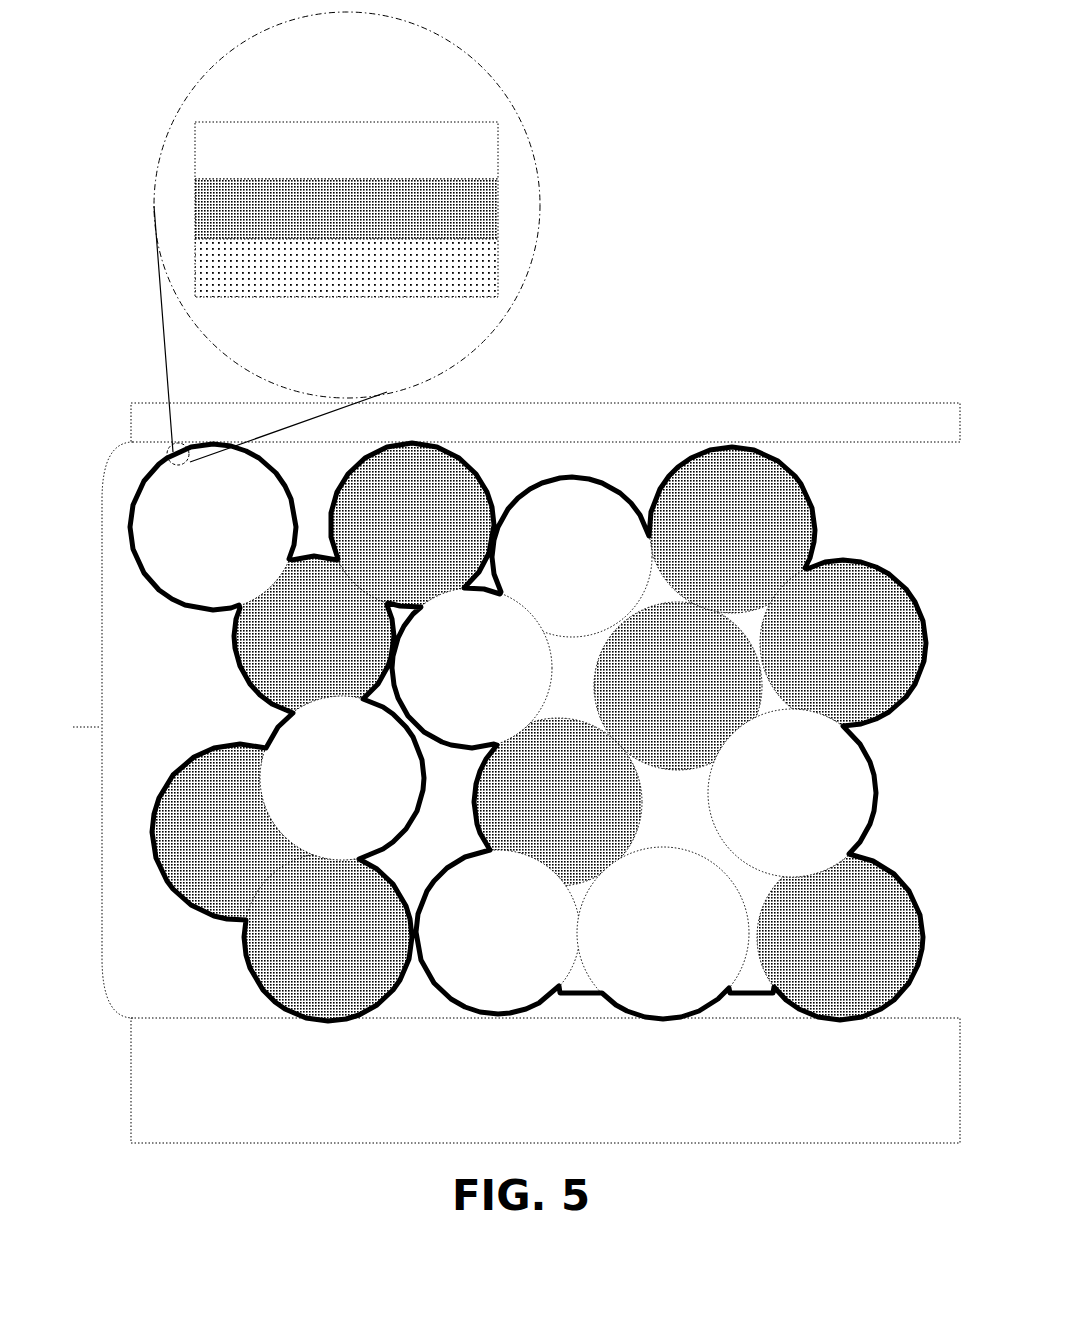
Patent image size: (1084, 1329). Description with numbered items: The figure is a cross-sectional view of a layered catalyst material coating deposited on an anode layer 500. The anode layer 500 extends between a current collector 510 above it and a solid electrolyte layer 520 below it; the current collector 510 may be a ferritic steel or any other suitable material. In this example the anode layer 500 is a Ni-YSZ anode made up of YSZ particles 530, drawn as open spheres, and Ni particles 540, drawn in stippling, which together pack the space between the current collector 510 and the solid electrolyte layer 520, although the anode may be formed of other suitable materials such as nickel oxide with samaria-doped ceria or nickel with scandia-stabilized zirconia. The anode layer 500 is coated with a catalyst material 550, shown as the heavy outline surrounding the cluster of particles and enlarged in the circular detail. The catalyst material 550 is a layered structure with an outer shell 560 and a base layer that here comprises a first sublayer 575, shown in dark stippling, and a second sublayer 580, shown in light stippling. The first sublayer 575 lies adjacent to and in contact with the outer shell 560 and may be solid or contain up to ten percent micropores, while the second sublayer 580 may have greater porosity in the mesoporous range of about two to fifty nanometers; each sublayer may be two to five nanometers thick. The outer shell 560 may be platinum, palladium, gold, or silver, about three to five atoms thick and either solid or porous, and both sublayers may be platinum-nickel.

The anode layer 500 is at (73, 715).
The current collector 510 is at (615, 403).
The solid electrolyte layer 520 is at (712, 1143).
The first type of particle 530 is at (852, 807).
The Ni particles 540 is at (798, 528).
The catalyst material 550 is at (485, 67).
The outer shell 560 is at (461, 152).
The first sublayer 575 is at (467, 211).
The second sublayer 580 is at (474, 272).